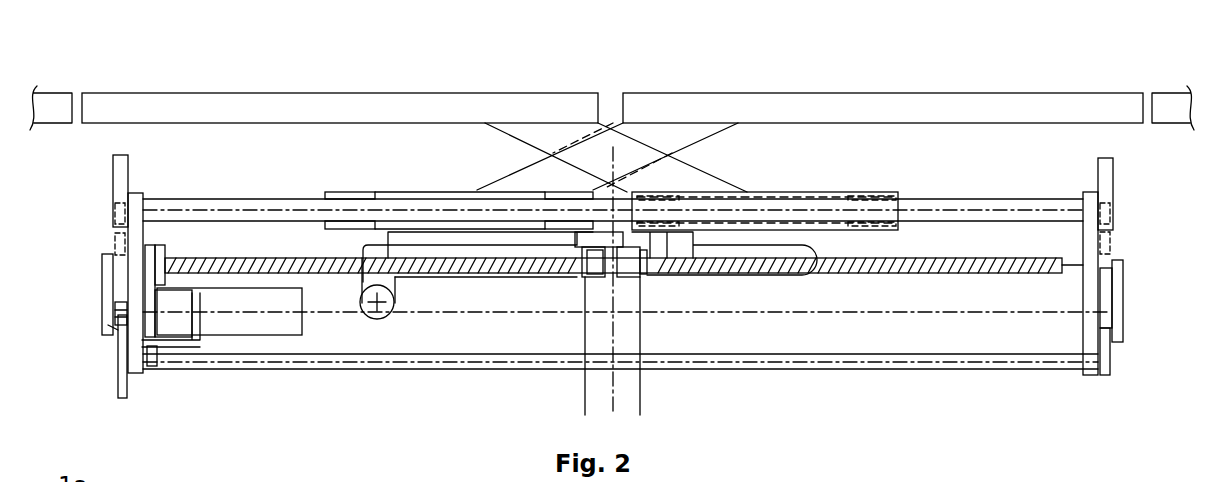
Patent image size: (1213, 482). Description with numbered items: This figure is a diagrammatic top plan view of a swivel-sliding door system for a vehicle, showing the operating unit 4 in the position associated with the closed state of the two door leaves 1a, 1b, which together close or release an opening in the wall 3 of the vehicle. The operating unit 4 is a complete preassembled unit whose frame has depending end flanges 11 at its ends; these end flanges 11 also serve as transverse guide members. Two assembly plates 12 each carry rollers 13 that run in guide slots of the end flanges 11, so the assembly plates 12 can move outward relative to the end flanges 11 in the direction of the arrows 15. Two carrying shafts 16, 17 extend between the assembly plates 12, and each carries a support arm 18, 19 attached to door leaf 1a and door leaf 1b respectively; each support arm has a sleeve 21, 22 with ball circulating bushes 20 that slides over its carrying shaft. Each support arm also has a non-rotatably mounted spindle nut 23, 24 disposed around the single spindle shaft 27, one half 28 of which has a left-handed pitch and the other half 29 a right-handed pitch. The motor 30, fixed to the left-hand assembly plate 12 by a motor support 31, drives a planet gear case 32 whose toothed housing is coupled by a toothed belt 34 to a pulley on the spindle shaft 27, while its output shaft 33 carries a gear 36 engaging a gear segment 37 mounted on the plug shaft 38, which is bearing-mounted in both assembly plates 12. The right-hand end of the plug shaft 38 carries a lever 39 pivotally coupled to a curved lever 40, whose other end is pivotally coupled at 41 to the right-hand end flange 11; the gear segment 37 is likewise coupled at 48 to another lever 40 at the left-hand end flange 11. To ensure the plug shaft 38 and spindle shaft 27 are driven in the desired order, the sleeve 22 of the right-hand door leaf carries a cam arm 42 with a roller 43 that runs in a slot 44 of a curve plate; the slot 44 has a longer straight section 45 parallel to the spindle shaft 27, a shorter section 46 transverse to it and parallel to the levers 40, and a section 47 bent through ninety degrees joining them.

The door leaf 1a is at (462, 107).
The door leaf 1b is at (762, 107).
The wall 3 is at (54, 107).
The operating unit 4 is at (942, 86).
The end flange 11 is at (113, 165).
The assembly plate 12 is at (135, 195).
The roller 13 is at (113, 207).
The arrow 15 is at (163, 162).
The carrying shaft 16 is at (270, 198).
The carrying shaft 17 is at (271, 199).
The support arm 18 is at (698, 178).
The support arm 19 is at (533, 178).
The ball circulating bush 20 is at (560, 190).
The sleeve 21 is at (815, 193).
The sleeve 22 is at (428, 197).
The spindle nut 23 is at (580, 268).
The spindle nut 24 is at (650, 272).
The spindle shaft 27 is at (948, 292).
The spindle shaft half 28 is at (892, 274).
The spindle shaft half 29 is at (340, 260).
The motor 30 is at (285, 336).
The motor support 31 is at (200, 340).
The planet gear case 32 is at (176, 338).
The output shaft 33 is at (145, 295).
The toothed belt 34 is at (152, 366).
The gear 36 is at (115, 315).
The gear segment 37 is at (118, 392).
The plug shaft 38 is at (815, 370).
The lever 39 is at (1111, 369).
The lever 40 is at (102, 272).
The pivot 41 is at (1123, 270).
The cam arm 42 is at (366, 239).
The roller 43 is at (380, 316).
The slot 44 is at (510, 290).
The slot section 45 is at (466, 279).
The slot section 46 is at (365, 302).
The bent section 47 is at (398, 282).
The pivot 48 is at (118, 330).